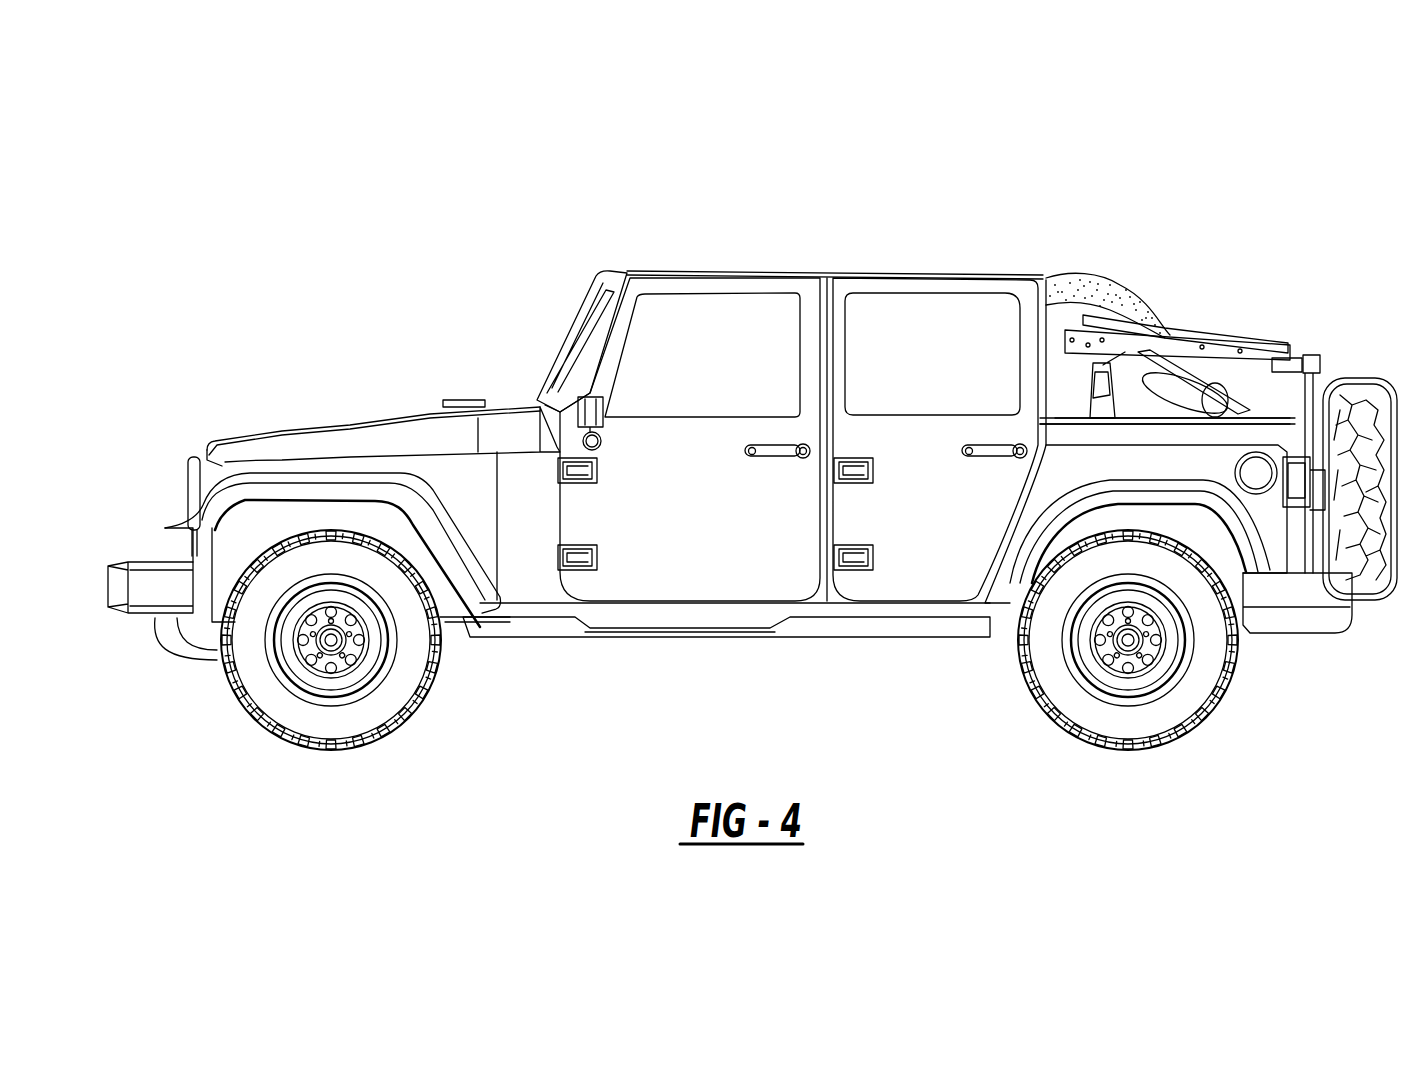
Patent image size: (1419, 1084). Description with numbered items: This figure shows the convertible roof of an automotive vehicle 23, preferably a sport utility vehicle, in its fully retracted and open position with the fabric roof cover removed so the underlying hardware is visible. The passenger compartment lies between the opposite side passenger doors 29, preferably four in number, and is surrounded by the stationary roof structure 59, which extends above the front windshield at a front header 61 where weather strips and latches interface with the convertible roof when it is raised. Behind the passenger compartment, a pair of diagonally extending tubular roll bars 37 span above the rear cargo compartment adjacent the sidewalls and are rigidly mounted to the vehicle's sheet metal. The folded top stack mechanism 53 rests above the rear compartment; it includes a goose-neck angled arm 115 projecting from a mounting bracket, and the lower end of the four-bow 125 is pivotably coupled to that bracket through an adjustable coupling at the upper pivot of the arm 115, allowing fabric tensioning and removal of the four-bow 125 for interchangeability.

The automotive vehicle 23 is at (525, 573).
The side passenger doors 29 is at (710, 523).
The roll bars 37 is at (1092, 277).
The top stack mechanism 53 is at (1226, 302).
The stationary roof structure 59 is at (707, 277).
The front header 61 is at (617, 278).
The goose-neck angled arm 115 is at (1100, 383).
The four-bow 125 is at (1250, 400).